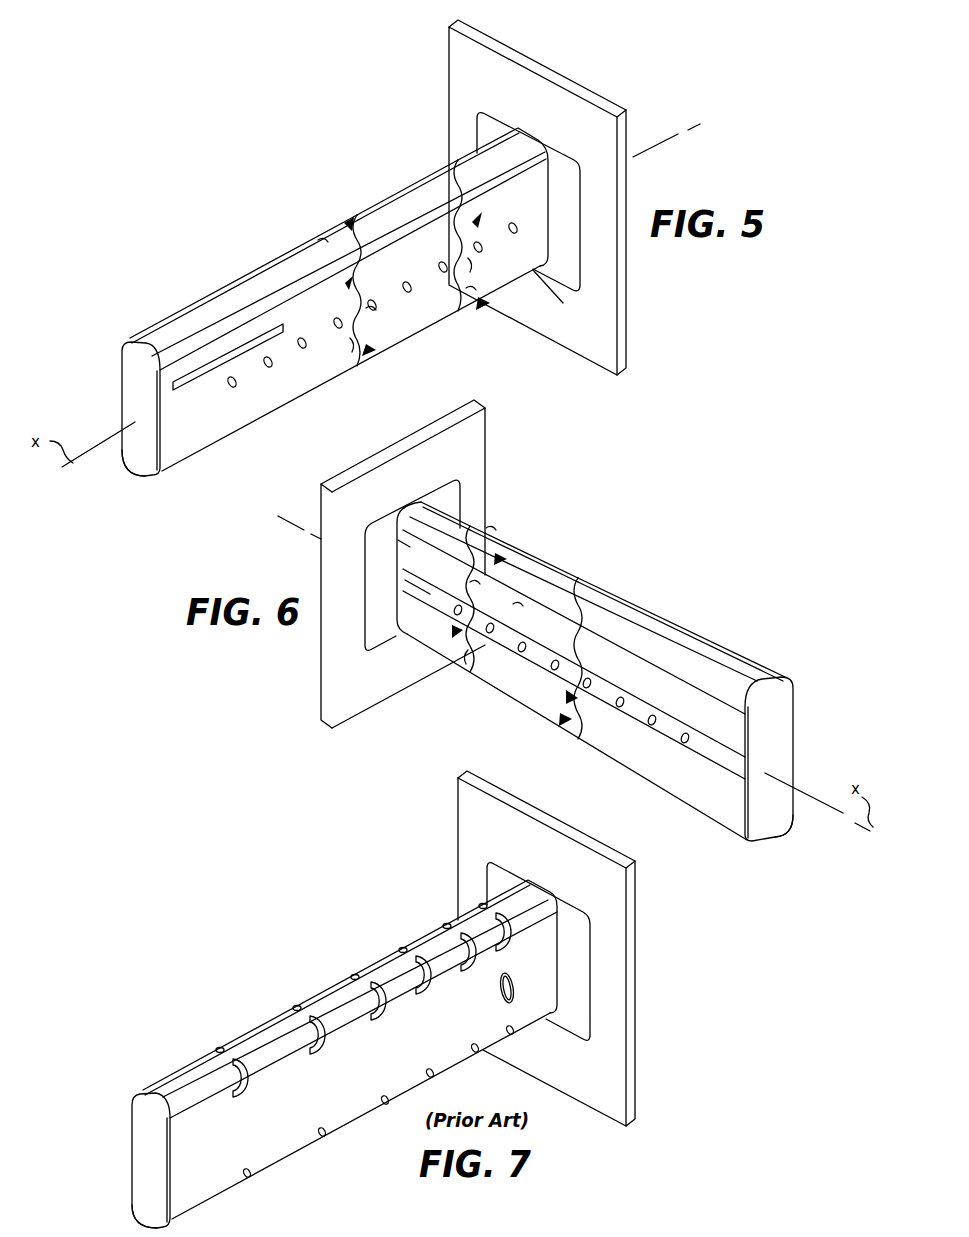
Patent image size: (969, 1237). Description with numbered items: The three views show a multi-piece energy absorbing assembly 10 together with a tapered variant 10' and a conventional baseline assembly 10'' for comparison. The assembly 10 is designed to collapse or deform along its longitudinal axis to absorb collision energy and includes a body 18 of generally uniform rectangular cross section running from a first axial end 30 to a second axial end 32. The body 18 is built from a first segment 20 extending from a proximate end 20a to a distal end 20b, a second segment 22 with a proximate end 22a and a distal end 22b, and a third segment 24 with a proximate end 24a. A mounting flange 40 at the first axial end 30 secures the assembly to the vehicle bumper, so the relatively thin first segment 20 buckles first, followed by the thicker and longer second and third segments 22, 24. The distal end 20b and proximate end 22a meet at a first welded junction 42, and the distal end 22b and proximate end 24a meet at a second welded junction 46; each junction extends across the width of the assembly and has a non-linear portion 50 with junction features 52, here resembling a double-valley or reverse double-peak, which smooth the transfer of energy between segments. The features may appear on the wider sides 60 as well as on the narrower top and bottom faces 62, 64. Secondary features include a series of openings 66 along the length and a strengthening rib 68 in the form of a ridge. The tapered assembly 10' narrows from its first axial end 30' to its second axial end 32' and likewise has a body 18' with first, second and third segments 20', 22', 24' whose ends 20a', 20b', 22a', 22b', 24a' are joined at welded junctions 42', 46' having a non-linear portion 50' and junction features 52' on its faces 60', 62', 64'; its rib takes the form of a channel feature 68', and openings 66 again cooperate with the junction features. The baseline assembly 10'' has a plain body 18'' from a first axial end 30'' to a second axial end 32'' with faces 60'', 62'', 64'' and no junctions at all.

In FIG. 5, the energy absorbing assembly 10 is at (335, 302).
In FIG. 5, the body 18 is at (353, 315).
In FIG. 5, the first segment 20 is at (505, 180).
In FIG. 5, the proximate end 20a is at (561, 301).
In FIG. 5, the distal end 20b is at (499, 265).
In FIG. 5, the second segment 22 is at (403, 187).
In FIG. 5, the proximate end 22a is at (437, 235).
In FIG. 5, the distal end 22b is at (384, 290).
In FIG. 5, the third segment 24 is at (244, 279).
In FIG. 5, the proximate end 24a is at (333, 354).
In FIG. 5, the first axial end 30 is at (546, 202).
In FIG. 5, the second axial end 32 is at (123, 393).
In FIG. 5, the mounting flange 40 is at (604, 126).
In FIG. 6, the mounting flange 40 is at (474, 437).
In FIG. 7, the mounting flange 40 is at (612, 888).
In FIG. 5, the first welded junction 42 is at (503, 208).
In FIG. 5, the second welded junction 46 is at (329, 296).
In FIG. 5, the non-linear portion 50 is at (401, 281).
In FIG. 5, the junction features 52 is at (369, 275).
In FIG. 5, the sides or faces 60 is at (151, 430).
In FIG. 5, the top side 62 is at (329, 254).
In FIG. 5, the bottom side 64 is at (138, 482).
In FIG. 5, the openings 66 is at (233, 386).
In FIG. 6, the openings 66 is at (624, 702).
In FIG. 5, the ribs 68 is at (228, 369).
In FIG. 6, the energy absorbing assembly 10' is at (595, 671).
In FIG. 6, the side wall 18' is at (575, 685).
In FIG. 6, the first segment 20' is at (466, 551).
In FIG. 6, the first end of first segment 20a' is at (429, 555).
In FIG. 6, the second end of first segment 20b' is at (448, 680).
In FIG. 6, the second segment 22' is at (571, 554).
In FIG. 6, the first end of second segment 22a' is at (592, 637).
In FIG. 6, the second end of second segment 22b' is at (517, 610).
In FIG. 6, the third segment 24' is at (681, 629).
In FIG. 6, the end of third segment 24a' is at (574, 674).
In FIG. 6, the first axial end 30' is at (409, 565).
In FIG. 6, the second axial end 32' is at (782, 738).
In FIG. 6, the welded junction 42' is at (430, 620).
In FIG. 6, the welded junction 46' is at (589, 712).
In FIG. 6, the non-linear portion 50' is at (532, 624).
In FIG. 6, the junction feature 52' is at (516, 556).
In FIG. 6, the end portion 60' is at (772, 772).
In FIG. 6, the lip 62' is at (604, 599).
In FIG. 6, the rounded corner 64' is at (802, 838).
In FIG. 6, the channel feature 68' is at (381, 567).
In FIG. 7, the assembly 10'' is at (345, 1052).
In FIG. 7, the side wall 18'' is at (363, 1065).
In FIG. 7, the opening 30'' is at (589, 952).
In FIG. 7, the end cap 32'' is at (126, 1142).
In FIG. 7, the end portion 60'' is at (160, 1173).
In FIG. 7, the lip 62'' is at (349, 988).
In FIG. 7, the rounded corner 64'' is at (117, 1212).